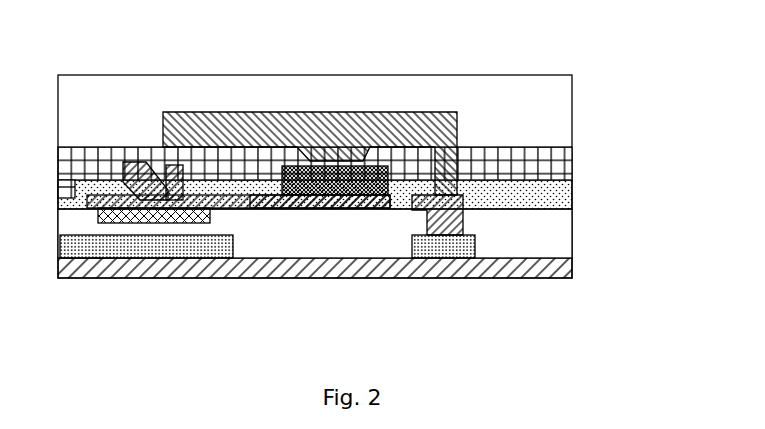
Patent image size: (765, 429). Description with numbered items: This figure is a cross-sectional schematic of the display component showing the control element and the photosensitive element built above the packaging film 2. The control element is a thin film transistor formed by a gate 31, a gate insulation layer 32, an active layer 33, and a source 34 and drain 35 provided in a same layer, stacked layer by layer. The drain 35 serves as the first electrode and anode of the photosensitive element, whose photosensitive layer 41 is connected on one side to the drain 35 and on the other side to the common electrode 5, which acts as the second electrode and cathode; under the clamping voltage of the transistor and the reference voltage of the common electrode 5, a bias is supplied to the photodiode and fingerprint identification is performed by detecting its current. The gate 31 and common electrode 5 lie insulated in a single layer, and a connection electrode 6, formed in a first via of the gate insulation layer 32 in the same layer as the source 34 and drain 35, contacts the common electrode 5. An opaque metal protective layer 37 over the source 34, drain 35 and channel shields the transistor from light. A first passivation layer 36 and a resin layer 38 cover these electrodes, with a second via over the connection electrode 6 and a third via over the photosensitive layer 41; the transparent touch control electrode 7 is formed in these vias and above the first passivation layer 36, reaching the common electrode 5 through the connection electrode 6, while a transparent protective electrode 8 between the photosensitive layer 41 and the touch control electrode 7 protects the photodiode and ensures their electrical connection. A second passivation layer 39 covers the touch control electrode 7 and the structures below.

The packaging film 2 is at (562, 273).
The common electrode 5 is at (433, 235).
The connection electrode 6 is at (466, 250).
The touch control electrode 7 is at (347, 112).
The protective electrode 8 is at (327, 178).
The gate 31 is at (191, 194).
The gate insulation layer 32 is at (552, 237).
The active layer 33 is at (117, 200).
The source 34 is at (97, 195).
The drain 35 is at (290, 186).
The first passivation layer 36 is at (552, 203).
The protective layer 37 is at (160, 196).
The resin layer 38 is at (552, 168).
The second passivation layer 39 is at (552, 120).
The photosensitive layer 41 is at (363, 195).